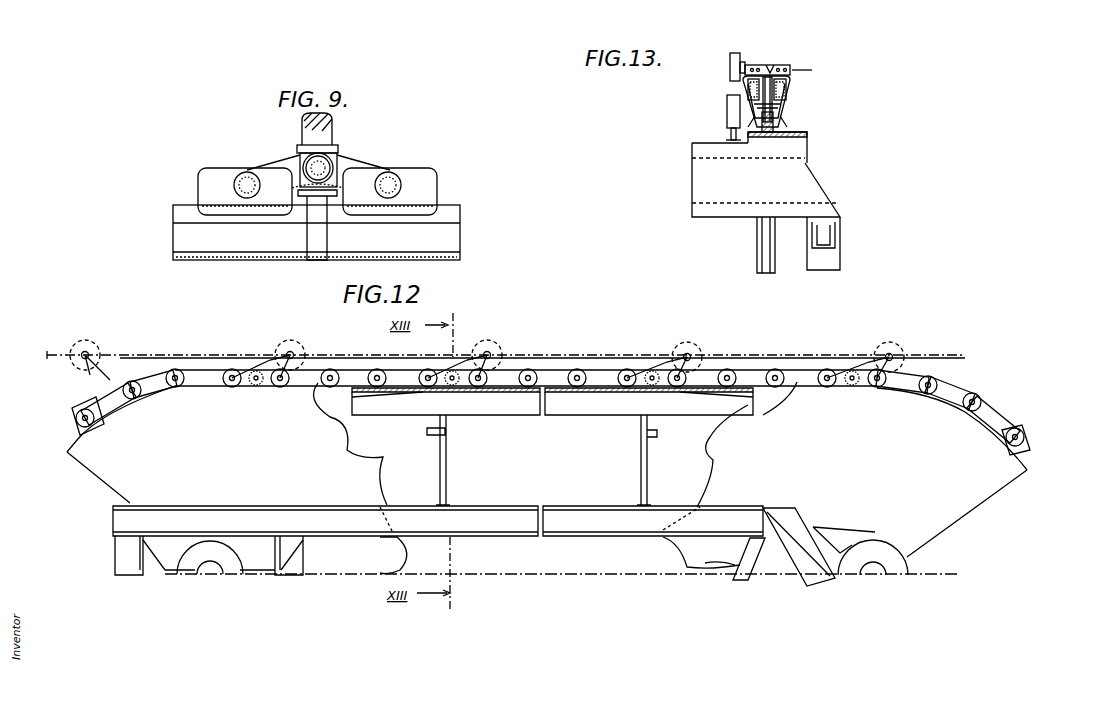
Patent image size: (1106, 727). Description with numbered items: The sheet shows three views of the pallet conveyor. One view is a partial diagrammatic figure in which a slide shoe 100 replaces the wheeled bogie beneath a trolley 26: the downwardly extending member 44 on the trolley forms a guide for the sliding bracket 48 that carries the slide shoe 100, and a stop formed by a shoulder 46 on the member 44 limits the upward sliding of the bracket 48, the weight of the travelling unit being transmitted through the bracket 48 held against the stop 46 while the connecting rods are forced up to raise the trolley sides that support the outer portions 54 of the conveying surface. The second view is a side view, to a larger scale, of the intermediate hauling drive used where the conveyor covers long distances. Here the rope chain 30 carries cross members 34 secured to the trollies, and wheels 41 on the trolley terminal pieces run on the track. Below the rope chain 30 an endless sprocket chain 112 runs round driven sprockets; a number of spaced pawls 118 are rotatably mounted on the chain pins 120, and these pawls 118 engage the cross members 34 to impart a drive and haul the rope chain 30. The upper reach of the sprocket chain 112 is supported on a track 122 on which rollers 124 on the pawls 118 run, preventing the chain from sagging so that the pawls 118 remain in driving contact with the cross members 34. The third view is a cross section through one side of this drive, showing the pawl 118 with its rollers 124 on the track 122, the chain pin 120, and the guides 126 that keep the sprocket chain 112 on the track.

In FIG. 9, the trolley 26 is at (225, 238).
In FIG. 9, the downwardly extending member 44 is at (332, 130).
In FIG. 9, the shoulder stop 46 is at (338, 148).
In FIG. 9, the sliding bracket 48 is at (317, 196).
In FIG. 9, the outer portion of the conveying surface 54 is at (296, 165).
In FIG. 9, the slide shoe 100 is at (207, 178).
In FIG. 13, the rope chain 30 is at (752, 65).
In FIG. 12, the rope chain 30 is at (147, 352).
In FIG. 13, the cross member 34 is at (813, 71).
In FIG. 12, the cross member 34 is at (89, 352).
In FIG. 13, the wheel 41 is at (733, 60).
In FIG. 12, the wheel 41 is at (84, 341).
In FIG. 13, the endless sprocket chain 112 is at (786, 102).
In FIG. 12, the endless sprocket chain 112 is at (128, 403).
In FIG. 13, the pawl 118 is at (774, 68).
In FIG. 12, the pawl 118 is at (270, 358).
In FIG. 13, the chain pin 120 is at (745, 86).
In FIG. 12, the chain pin 120 is at (280, 381).
In FIG. 13, the track 122 is at (776, 118).
In FIG. 12, the track 122 is at (340, 413).
In FIG. 13, the roller 124 is at (790, 89).
In FIG. 12, the roller 124 is at (254, 381).
In FIG. 13, the guide 126 is at (727, 113).